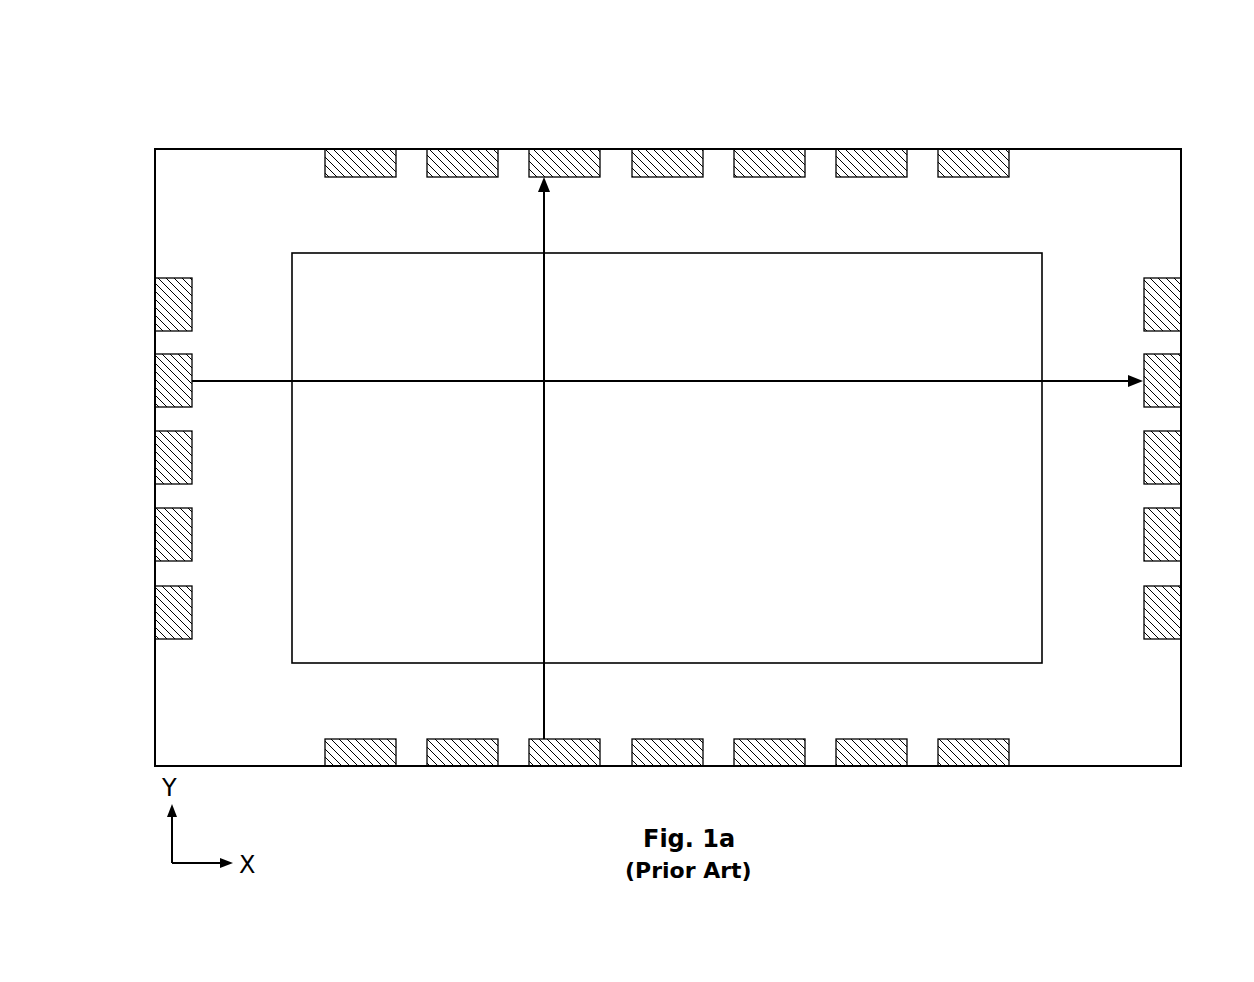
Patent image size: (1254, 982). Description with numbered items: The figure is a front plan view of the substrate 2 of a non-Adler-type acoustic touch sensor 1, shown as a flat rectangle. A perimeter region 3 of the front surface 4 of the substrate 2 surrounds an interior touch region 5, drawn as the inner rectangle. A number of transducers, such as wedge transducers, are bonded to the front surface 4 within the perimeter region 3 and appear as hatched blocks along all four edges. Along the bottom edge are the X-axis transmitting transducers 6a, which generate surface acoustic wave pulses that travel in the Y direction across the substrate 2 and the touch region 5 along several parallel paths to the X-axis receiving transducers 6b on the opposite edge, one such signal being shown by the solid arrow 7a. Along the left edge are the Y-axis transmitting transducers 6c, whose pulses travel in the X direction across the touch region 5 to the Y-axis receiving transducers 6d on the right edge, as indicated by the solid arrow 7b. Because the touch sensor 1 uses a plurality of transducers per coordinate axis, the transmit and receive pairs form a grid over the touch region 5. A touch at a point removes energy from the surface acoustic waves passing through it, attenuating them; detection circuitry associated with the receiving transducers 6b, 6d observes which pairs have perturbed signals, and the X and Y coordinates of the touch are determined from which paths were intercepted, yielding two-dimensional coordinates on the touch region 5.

The acoustic touch sensor 1 is at (670, 444).
The substrate 2 is at (270, 149).
The perimeter region 3 is at (218, 714).
The front surface 4 is at (1112, 750).
The touch region 5 is at (874, 551).
The X-axis transmitting transducers 6a is at (878, 760).
The X-axis receiving transducers 6b is at (666, 160).
The Y-axis transmitting transducers 6c is at (170, 295).
The Y-axis receiving transducers 6d is at (1170, 613).
The transmitted surface acoustic wave signal 7a is at (545, 470).
The transmitted surface acoustic wave signal 7b is at (903, 383).